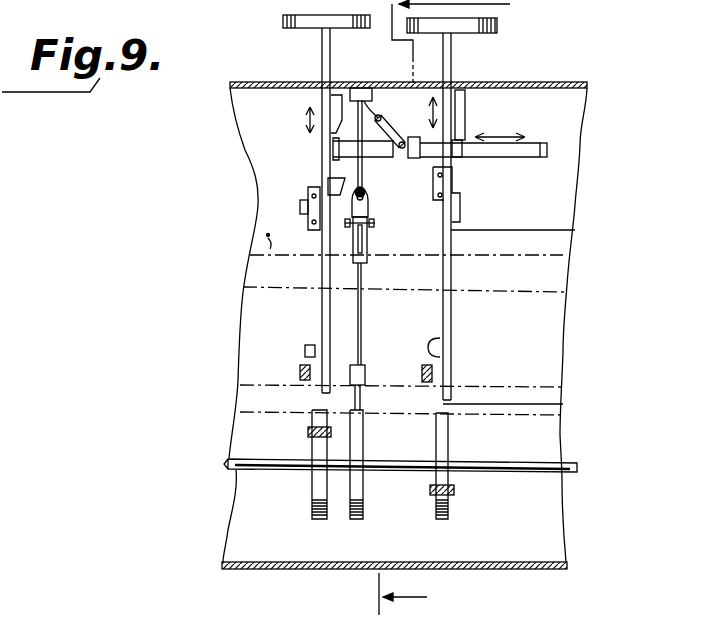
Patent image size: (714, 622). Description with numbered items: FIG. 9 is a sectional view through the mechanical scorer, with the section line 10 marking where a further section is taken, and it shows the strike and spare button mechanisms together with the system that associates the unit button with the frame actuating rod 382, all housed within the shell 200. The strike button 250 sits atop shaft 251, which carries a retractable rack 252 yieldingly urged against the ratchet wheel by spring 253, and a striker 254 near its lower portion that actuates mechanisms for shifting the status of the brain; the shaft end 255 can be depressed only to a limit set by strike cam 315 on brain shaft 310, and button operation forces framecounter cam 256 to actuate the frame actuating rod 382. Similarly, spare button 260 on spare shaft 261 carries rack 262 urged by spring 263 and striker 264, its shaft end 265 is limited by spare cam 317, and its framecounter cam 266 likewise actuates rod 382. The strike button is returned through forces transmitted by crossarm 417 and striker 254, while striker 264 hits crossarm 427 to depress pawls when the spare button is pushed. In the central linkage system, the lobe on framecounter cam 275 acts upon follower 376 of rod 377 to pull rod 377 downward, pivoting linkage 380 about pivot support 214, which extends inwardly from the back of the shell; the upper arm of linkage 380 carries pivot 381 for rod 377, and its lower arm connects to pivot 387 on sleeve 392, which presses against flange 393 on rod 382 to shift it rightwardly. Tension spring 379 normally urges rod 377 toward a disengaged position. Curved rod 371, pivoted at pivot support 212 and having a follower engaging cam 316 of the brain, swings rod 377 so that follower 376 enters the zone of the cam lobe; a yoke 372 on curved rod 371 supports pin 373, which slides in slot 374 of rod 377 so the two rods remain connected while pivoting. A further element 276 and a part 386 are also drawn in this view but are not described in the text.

The section line 10— 10 is at (465, 308).
The shell 200 is at (642, 61).
The pivot support 212 is at (397, 356).
The pivot support 214 is at (378, 66).
The strike button 250 is at (291, 16).
The shaft 251 is at (321, 34).
The rack 252 is at (337, 190).
The spring 253 is at (310, 208).
The striker 254 is at (305, 352).
The shaft end 255 is at (308, 403).
The framecounter cam 256 is at (332, 108).
The spare button 260 is at (498, 26).
The spare shaft 261 is at (452, 47).
The rack 262 is at (575, 231).
The spring 263 is at (462, 203).
The striker 264 is at (440, 338).
The shaft end 265 is at (563, 404).
The framecounter cam 266 is at (458, 100).
The framecounter cam 275 is at (264, 234).
The plate 276 is at (543, 388).
The brain shaft 310 is at (507, 463).
The strike cam 315 is at (312, 515).
The cam 316 is at (380, 537).
The spare cam 317 is at (445, 520).
The curved rod 371 is at (363, 398).
The yoke 372 is at (369, 238).
The pin 373 is at (370, 222).
The slot 374 is at (355, 228).
The follower 376 is at (364, 270).
The rod 377 is at (436, 170).
The tension spring 379 is at (343, 190).
The linkage 380 is at (382, 118).
The pivot 381 is at (366, 90).
The frame actuating rod 382 is at (563, 127).
The collar 386 is at (456, 160).
The pivot 387 is at (409, 137).
The sleeve 392 is at (380, 160).
The flange 393 is at (425, 137).
The crossarm 417 is at (300, 373).
The crossarm 427 is at (451, 377).